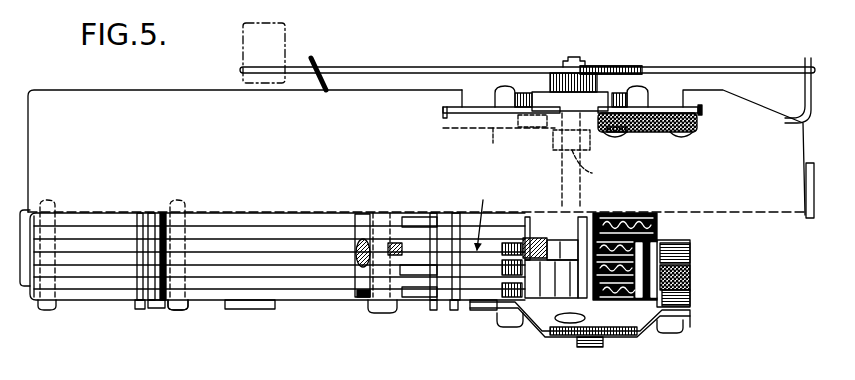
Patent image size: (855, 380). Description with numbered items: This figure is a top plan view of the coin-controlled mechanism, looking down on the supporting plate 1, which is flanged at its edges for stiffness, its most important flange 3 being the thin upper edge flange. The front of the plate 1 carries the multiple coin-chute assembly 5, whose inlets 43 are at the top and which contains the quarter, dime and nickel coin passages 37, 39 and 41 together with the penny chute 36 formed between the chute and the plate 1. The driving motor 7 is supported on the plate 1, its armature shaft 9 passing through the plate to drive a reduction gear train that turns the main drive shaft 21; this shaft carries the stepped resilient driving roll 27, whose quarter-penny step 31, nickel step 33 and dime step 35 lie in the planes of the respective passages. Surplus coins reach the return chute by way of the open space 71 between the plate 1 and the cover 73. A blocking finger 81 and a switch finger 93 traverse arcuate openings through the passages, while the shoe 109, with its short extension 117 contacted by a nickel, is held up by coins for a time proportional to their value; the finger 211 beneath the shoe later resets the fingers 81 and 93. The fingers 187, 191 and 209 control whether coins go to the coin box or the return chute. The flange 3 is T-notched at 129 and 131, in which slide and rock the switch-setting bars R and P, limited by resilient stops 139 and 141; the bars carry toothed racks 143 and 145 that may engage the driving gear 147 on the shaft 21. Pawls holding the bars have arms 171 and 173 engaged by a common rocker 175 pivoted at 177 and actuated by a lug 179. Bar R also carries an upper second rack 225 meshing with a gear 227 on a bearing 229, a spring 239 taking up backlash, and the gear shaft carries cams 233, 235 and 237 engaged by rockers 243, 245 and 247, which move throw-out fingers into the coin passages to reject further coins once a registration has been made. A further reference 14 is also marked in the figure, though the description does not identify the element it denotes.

The supporting plate 1 is at (230, 220).
The flange 3 is at (210, 115).
The multiple coin-chute assembly 5 is at (293, 273).
The driving motor 7 is at (692, 253).
The armature shaft 9 is at (585, 347).
The slide assembly 14 is at (708, 217).
The main drive shaft 21 is at (588, 70).
The stepped resilient driving roll 27 is at (692, 303).
The quarter-penny step 31 is at (692, 270).
The nickel step 33 is at (682, 330).
The dime step 35 is at (692, 287).
The penny chute 36 is at (420, 220).
The quarter coin passage 37 is at (397, 247).
The dime coin passage 39 is at (415, 268).
The nickel coin passage 41 is at (410, 298).
The inlets 43 is at (443, 210).
The open space 71 is at (213, 240).
The cover 73 is at (200, 308).
The blocking finger 81 is at (495, 315).
The finger 93 is at (433, 310).
The shoe 109 is at (360, 292).
The short extension 117 is at (455, 310).
The T-notch 129 is at (700, 105).
The T-notch 131 is at (443, 114).
The resilient stop 139 is at (655, 135).
The resilient stop 141 is at (492, 143).
The toothed rack 143 is at (640, 94).
The toothed rack 145 is at (502, 90).
The driving gear 147 is at (524, 93).
The arm 171 is at (806, 60).
The arm 173 is at (314, 64).
The common rocker 175 is at (348, 66).
The pivot 177 is at (568, 57).
The lug 179 is at (287, 33).
The finger 187 is at (155, 308).
The interceptor finger 191 is at (244, 310).
The finger 209 is at (138, 309).
The finger 211 is at (385, 315).
The upper second rack 225 is at (623, 134).
The gear 227 is at (543, 130).
The bearing 229 is at (598, 167).
The cam 233 is at (535, 247).
The cam 235 is at (586, 275).
The cam 237 is at (624, 307).
The spring 239 is at (635, 215).
The rocker 243 is at (497, 247).
The rocker 245 is at (503, 268).
The rocker 247 is at (510, 328).
The switch-setting bar P is at (469, 138).
The switch-setting bar R is at (698, 118).